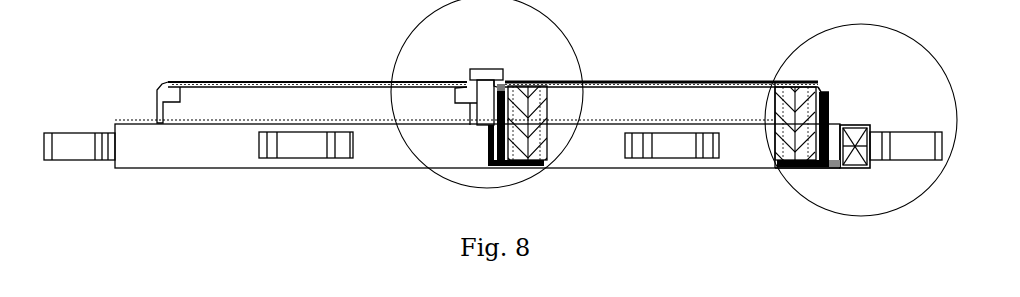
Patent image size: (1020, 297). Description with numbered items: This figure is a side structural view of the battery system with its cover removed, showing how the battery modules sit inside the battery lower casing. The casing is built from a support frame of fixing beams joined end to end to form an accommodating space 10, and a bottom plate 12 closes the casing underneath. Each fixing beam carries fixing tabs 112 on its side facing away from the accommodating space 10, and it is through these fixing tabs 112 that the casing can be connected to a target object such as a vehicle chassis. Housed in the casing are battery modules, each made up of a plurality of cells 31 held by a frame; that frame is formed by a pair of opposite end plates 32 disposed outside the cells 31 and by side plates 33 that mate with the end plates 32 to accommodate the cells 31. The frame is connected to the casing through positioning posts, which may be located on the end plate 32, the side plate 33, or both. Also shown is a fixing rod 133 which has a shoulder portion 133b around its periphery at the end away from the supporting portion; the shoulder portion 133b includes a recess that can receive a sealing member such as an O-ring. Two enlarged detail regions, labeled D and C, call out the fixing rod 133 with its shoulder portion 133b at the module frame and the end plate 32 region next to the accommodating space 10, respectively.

The accommodating space 10 is at (855, 125).
The bottom plate 12 is at (803, 165).
The cells 31 is at (792, 86).
The end plates 32 is at (490, 163).
The side plates 33 is at (720, 100).
The fixing tabs 112 is at (677, 147).
The fixing rod 133 is at (482, 118).
The shoulder portion 133b is at (481, 70).
The detail circle C is at (920, 43).
The detail circle D is at (577, 44).